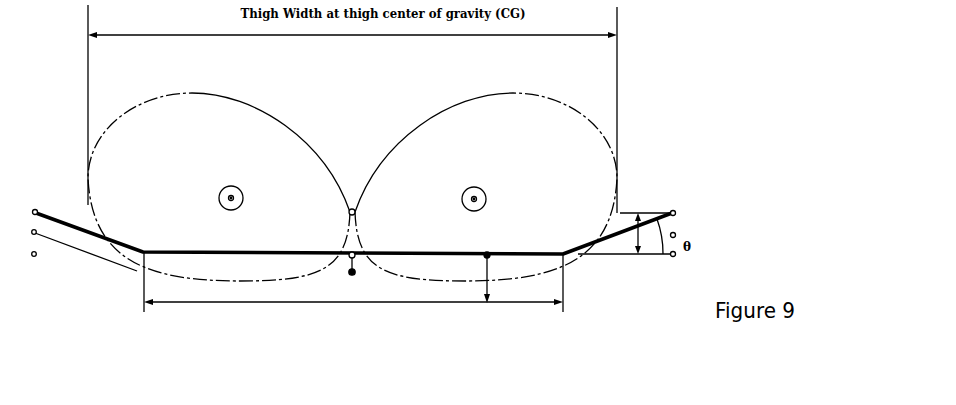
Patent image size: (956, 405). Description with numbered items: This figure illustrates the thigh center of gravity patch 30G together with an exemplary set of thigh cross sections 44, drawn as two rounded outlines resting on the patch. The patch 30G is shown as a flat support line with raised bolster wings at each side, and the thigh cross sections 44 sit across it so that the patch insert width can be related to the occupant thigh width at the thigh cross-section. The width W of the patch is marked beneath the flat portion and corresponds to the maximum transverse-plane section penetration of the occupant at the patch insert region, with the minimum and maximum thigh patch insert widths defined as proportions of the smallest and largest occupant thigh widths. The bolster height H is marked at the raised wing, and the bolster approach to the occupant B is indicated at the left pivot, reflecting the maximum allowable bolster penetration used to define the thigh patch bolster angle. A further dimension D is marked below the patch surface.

The thigh cross sections 44 is at (596, 127).
The thigh patch 30G is at (135, 253).
The bolster approach to the occupant B is at (50, 187).
The wing/bolster height H is at (624, 222).
The depth below support surface D is at (495, 277).
The width W is at (353, 286).